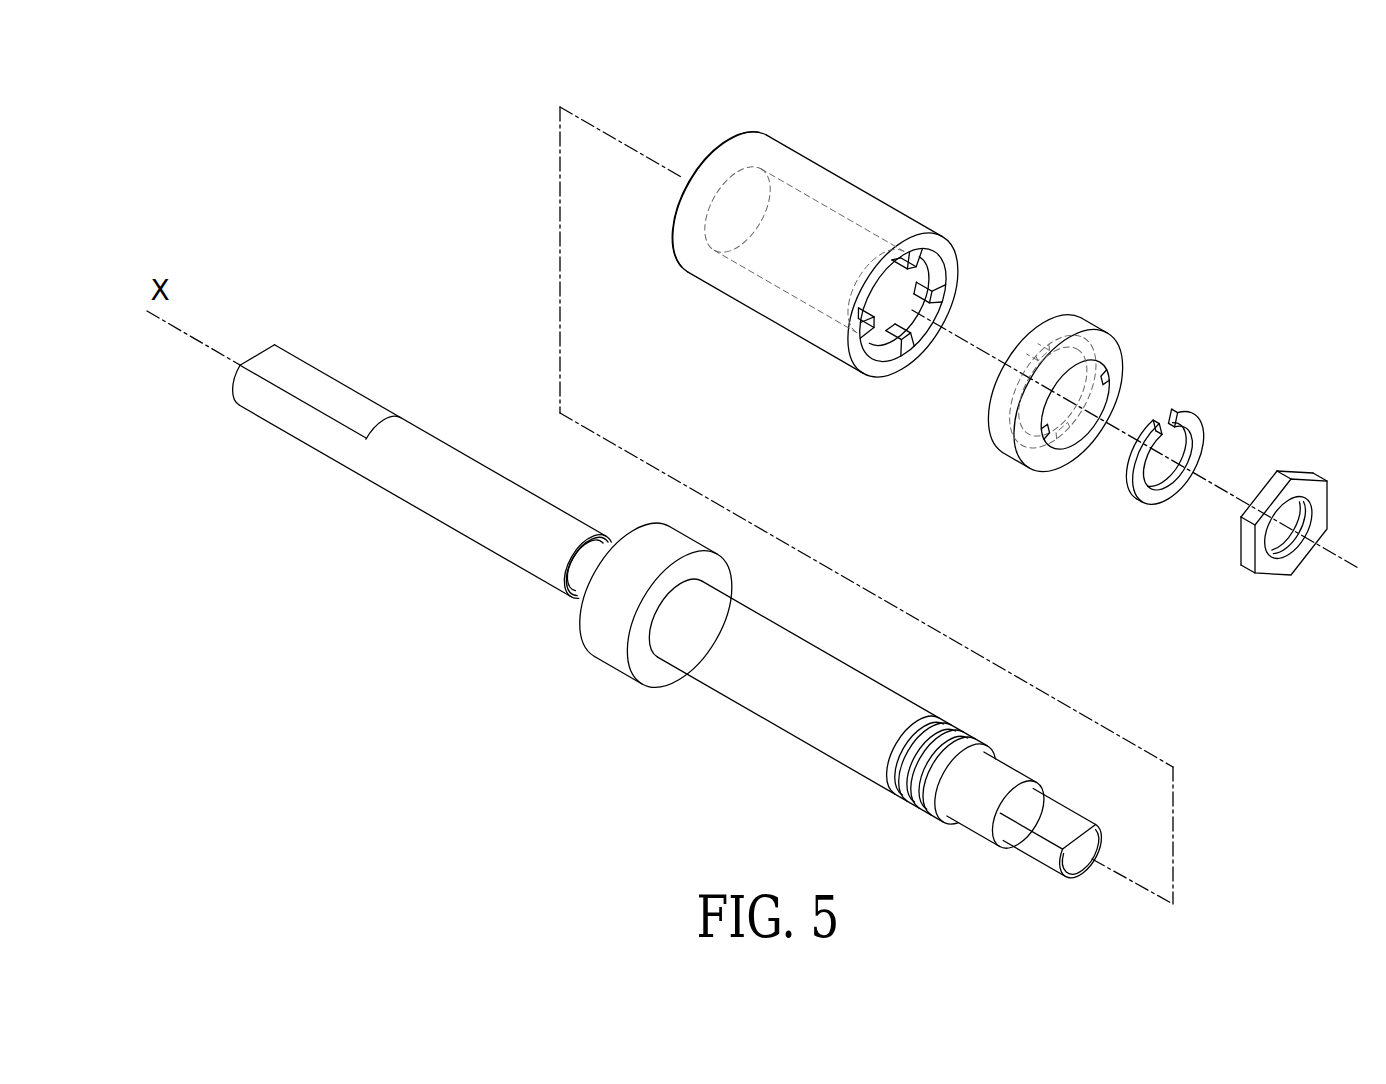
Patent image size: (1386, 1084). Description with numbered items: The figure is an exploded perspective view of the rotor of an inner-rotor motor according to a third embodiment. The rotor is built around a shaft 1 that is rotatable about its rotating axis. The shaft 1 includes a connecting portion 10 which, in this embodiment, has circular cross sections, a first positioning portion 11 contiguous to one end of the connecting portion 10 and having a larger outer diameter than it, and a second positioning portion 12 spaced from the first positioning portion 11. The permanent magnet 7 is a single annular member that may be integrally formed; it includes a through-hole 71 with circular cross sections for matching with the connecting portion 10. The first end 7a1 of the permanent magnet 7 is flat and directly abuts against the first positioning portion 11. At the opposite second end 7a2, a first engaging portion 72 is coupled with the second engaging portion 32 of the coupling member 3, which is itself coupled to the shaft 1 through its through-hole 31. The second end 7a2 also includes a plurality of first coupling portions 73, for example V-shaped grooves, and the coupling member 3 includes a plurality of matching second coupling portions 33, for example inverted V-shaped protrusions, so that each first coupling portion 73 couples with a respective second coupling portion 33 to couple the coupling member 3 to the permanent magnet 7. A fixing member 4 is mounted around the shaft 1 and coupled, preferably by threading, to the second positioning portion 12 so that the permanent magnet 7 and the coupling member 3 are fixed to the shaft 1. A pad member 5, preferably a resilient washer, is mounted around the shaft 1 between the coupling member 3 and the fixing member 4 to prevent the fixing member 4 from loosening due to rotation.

The shaft 1 is at (667, 611).
The connecting portion 10 is at (728, 685).
The first positioning portion 11 is at (600, 634).
The second positioning portion 12 is at (947, 730).
The coupling member 3 is at (1102, 410).
The through-hole 31 is at (1073, 418).
The second engaging portion 32 is at (1095, 330).
The second coupling portion 33 is at (1063, 316).
The fixing member 4 is at (1297, 480).
The pad member 5 is at (1200, 436).
The permanent magnet 7 is at (871, 252).
The first end 7a1 is at (690, 170).
The second end 7a2 is at (893, 287).
The through-hole 71 is at (893, 333).
The first engaging portion 72 is at (945, 244).
The first coupling portion 73 is at (952, 268).